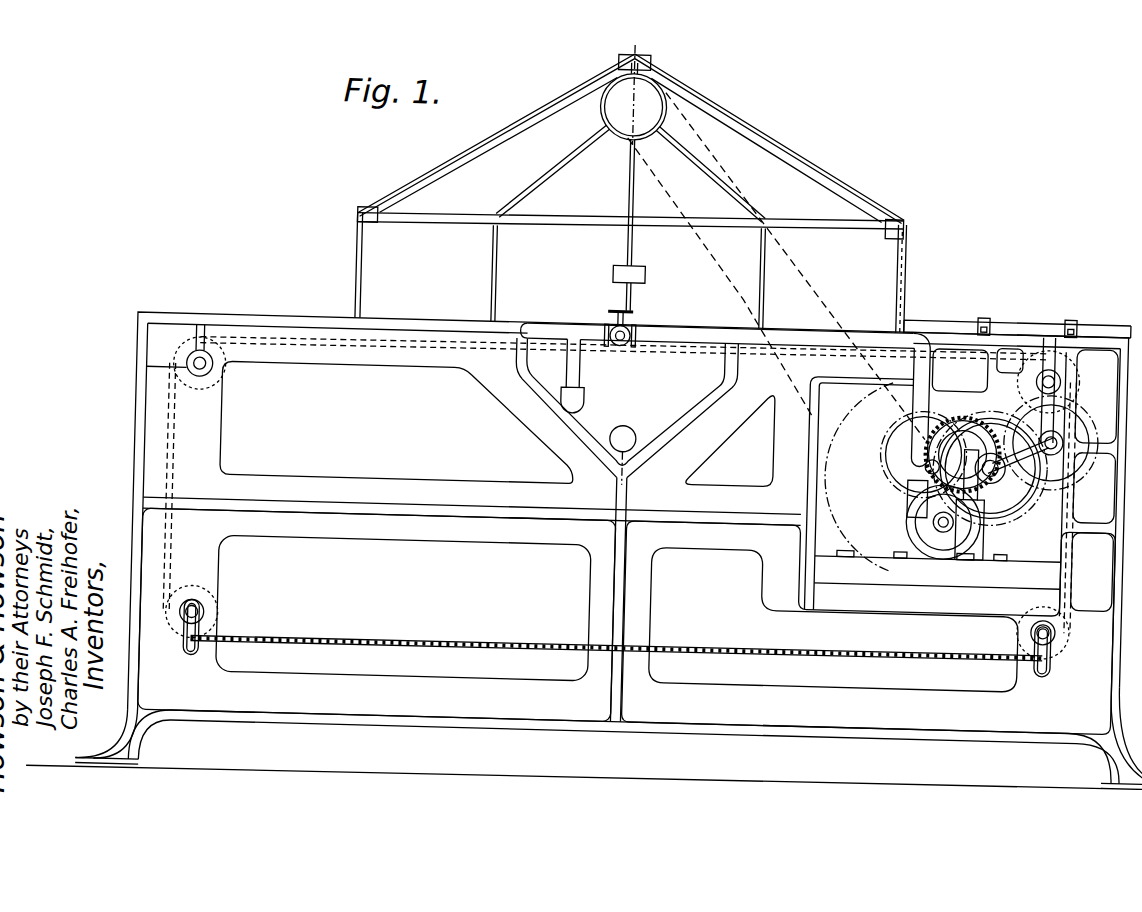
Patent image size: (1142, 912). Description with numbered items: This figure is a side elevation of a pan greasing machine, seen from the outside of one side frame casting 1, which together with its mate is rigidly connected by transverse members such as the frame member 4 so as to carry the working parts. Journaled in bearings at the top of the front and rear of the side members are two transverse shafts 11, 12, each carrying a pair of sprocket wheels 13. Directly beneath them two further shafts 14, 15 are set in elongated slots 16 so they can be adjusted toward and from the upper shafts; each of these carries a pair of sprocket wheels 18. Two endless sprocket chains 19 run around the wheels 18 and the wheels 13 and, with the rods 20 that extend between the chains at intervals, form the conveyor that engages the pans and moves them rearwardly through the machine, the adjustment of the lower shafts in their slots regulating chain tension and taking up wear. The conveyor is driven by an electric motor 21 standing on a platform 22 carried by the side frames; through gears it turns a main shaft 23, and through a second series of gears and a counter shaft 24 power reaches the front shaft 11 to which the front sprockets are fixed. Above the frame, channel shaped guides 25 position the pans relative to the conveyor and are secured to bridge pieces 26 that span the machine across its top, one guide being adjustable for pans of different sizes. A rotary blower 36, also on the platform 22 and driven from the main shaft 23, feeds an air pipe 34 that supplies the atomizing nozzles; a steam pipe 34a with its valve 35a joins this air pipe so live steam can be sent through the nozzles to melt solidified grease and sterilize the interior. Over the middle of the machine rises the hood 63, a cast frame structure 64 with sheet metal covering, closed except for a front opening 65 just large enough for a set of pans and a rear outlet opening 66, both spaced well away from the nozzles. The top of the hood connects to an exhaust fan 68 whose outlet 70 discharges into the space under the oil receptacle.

The side frame casting 1 is at (584, 552).
The transverse frame member 4 is at (632, 266).
The transverse shaft 11 is at (1061, 379).
The transverse shaft 12 is at (199, 382).
The sprocket wheel 13 is at (217, 365).
The shaft 14 is at (1066, 641).
The shaft 15 is at (217, 612).
The elongated slot 16 is at (624, 651).
The sprocket wheel 18 is at (617, 620).
The endless sprocket chain 19 is at (616, 639).
The rod 20 is at (620, 491).
The electric motor 21 is at (929, 456).
The platform 22 is at (939, 525).
The main shaft 23 is at (996, 468).
The counter shaft 24 is at (1052, 414).
The channel shaped guide 25 is at (1018, 316).
The bridge piece 26 is at (1030, 314).
The air pipe 34 is at (717, 324).
The steam pipe 34a is at (603, 377).
The valve 35a is at (607, 318).
The rotary blower 36 is at (931, 522).
The hood 63 is at (632, 143).
The frame structure 64 is at (633, 149).
The opening 65 is at (922, 346).
The outlet opening 66 is at (348, 262).
The exhaust fan 68 is at (853, 476).
The outlet 70 is at (833, 493).